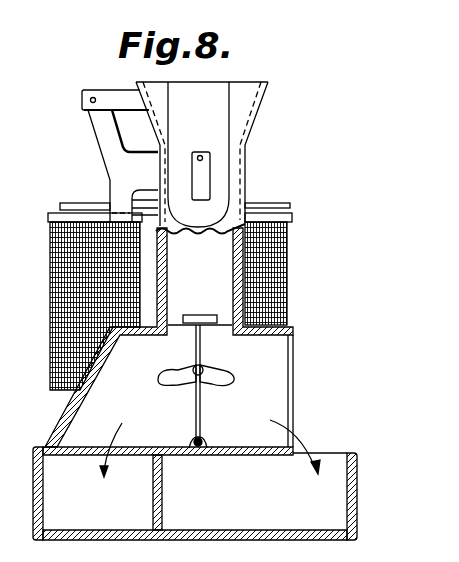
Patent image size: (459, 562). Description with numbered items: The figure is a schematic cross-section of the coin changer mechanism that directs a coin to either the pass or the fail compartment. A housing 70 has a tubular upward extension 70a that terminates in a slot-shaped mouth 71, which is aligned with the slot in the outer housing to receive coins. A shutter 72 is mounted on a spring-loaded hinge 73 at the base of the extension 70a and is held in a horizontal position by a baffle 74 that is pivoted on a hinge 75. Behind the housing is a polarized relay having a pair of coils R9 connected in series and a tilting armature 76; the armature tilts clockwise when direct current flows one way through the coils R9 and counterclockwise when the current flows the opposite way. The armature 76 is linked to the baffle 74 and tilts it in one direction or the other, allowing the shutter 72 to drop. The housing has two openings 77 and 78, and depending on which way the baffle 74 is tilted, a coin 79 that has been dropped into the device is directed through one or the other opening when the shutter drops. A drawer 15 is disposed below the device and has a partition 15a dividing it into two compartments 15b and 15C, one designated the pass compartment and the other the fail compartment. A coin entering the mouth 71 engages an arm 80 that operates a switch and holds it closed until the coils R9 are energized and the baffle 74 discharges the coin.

The slot-shaped mouth 71 is at (249, 90).
The arm 80 is at (203, 158).
The tilting armature 76 is at (88, 203).
The tubular upward extension 70a is at (250, 205).
The coils R9 is at (278, 261).
The coin 79 is at (195, 315).
The shutter 72 is at (173, 327).
The spring-loaded hinge 73 is at (228, 328).
The baffle 74 is at (195, 393).
The hinge 75 is at (192, 442).
The opening 78 is at (262, 390).
The housing 70 is at (250, 436).
The opening 77 is at (92, 450).
The partition 15a is at (162, 492).
The compartment 15b is at (78, 510).
The drawer 15 is at (215, 537).
The compartment 15C is at (265, 510).